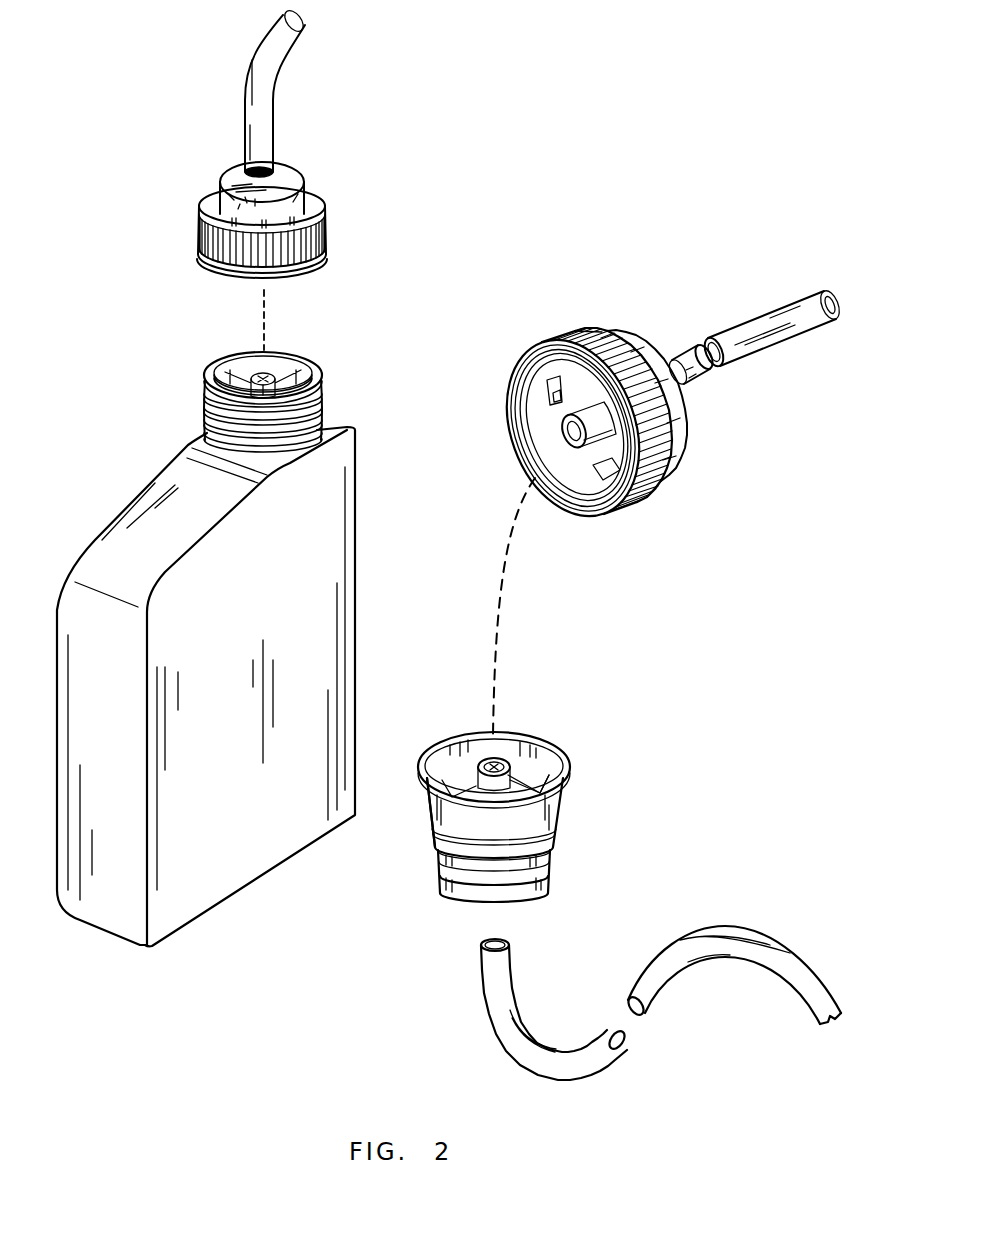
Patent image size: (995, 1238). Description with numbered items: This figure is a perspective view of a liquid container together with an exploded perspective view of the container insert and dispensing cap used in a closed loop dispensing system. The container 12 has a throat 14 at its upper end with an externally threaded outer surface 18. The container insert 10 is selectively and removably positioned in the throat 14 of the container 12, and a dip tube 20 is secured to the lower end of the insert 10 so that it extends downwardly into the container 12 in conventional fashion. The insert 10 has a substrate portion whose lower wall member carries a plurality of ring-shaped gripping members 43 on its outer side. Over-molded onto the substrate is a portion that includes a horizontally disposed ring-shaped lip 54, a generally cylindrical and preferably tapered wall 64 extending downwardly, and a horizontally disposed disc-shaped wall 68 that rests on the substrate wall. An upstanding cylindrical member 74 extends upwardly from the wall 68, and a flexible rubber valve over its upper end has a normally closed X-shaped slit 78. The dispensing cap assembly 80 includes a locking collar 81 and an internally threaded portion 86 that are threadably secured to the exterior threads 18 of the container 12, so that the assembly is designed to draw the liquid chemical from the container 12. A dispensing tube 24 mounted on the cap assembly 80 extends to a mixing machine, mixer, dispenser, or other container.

The container insert 10 is at (545, 786).
The container 12 is at (320, 625).
The throat 14 is at (303, 360).
The externally threaded outer surface 18 is at (320, 402).
The dip tube 20 is at (498, 972).
The dispensing tube 24 is at (272, 93).
The ring-shaped gripping members 43 is at (547, 863).
The ring-shaped lip 54 is at (420, 792).
The tapered wall 64 is at (543, 813).
The disc-shaped wall 68 is at (533, 783).
The upstanding cylindrical member 74 is at (233, 380).
The X-shaped slit 78 is at (490, 760).
The dispensing cap assembly 80 is at (457, 270).
The locking collar 81 is at (318, 240).
The internally threaded portion 86 is at (540, 455).